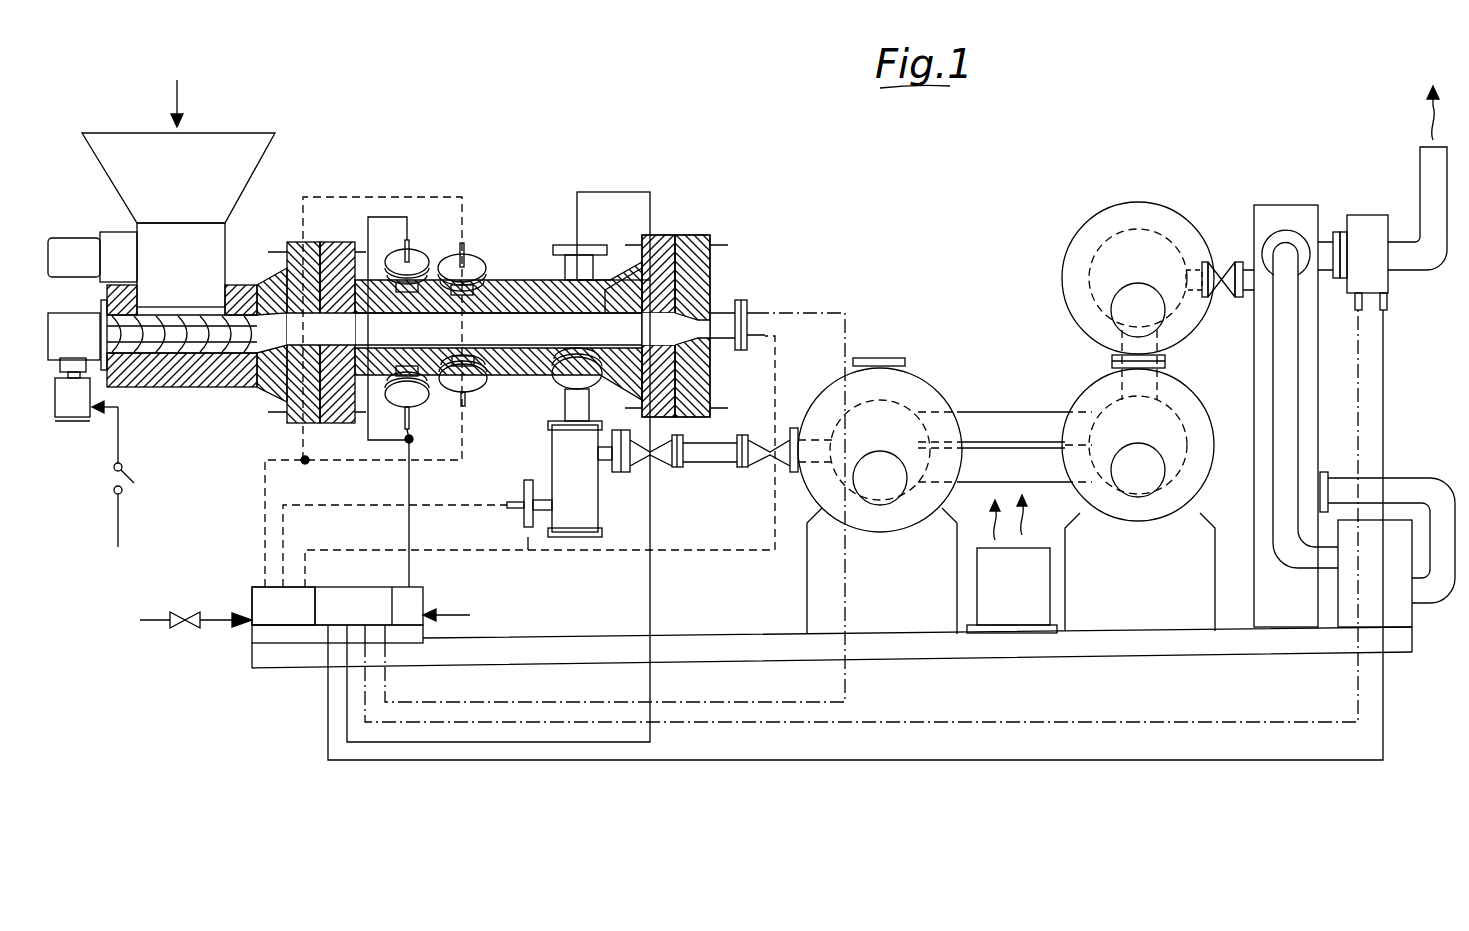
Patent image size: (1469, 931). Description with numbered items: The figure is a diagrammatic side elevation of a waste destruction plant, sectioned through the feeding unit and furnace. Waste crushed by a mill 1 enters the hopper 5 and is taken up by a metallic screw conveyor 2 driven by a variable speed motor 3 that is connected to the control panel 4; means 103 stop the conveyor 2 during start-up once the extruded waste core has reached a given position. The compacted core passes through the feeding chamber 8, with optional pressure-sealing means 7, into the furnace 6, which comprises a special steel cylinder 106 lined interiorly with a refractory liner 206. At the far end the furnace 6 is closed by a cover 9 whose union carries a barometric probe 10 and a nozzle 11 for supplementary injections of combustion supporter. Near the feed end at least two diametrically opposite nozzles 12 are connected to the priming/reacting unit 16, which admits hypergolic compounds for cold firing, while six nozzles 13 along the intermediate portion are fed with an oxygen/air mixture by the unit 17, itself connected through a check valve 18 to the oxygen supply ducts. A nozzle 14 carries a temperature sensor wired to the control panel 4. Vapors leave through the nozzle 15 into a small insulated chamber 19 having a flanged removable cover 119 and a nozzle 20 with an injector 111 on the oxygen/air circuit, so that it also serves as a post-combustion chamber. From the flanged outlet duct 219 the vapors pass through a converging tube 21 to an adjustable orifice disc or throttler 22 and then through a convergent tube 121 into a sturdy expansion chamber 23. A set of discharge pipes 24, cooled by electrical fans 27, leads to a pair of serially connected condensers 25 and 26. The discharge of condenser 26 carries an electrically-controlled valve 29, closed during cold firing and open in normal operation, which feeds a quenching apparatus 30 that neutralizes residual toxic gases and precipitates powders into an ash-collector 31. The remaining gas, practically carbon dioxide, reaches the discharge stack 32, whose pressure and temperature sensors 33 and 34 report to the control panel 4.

The mill 1 is at (125, 219).
The screw conveyor 2 is at (158, 394).
The variable speed motor 3 is at (72, 418).
The control panel 4 is at (318, 632).
The hopper 5 is at (237, 150).
The furnace 6 is at (520, 272).
The pressure-sealing means 7 is at (300, 300).
The feeding chamber 8 is at (292, 345).
The cover 9 is at (705, 245).
The barometric probe 10 is at (755, 303).
The nozzle 11 is at (745, 352).
The nozzles 12 is at (412, 252).
The nozzles 13 is at (470, 258).
The nozzle 14 is at (572, 243).
The nozzle 15 is at (553, 385).
The priming/reacting unit 16 is at (425, 606).
The unit 17 is at (252, 590).
The check valve 18 is at (182, 630).
The small chamber 19 is at (552, 457).
The nozzle 20 is at (527, 545).
The converging tube 21 is at (662, 456).
The adjustable orifice disc or throttler 22 is at (712, 462).
The expansion chamber 23 is at (910, 362).
The discharge pipes 24 is at (1032, 405).
The condenser 25 is at (1172, 482).
The condenser 26 is at (1112, 243).
The electrical fans 27 is at (1050, 566).
The electrically-controlled valve 29 is at (1223, 260).
The quenching apparatus 30 is at (1282, 198).
The ash-collector 31 is at (1330, 592).
The discharge stack 32 is at (1366, 210).
The pressure sensor 33 is at (1356, 311).
The temperature sensor 34 is at (1386, 311).
The means 103 is at (157, 477).
The cylinder 106 is at (640, 262).
The injector 111 is at (507, 503).
The flanged removable cover 119 is at (572, 538).
The convergent tube 121 is at (798, 427).
The liner 206 is at (690, 325).
The flanged outlet duct 219 is at (625, 475).